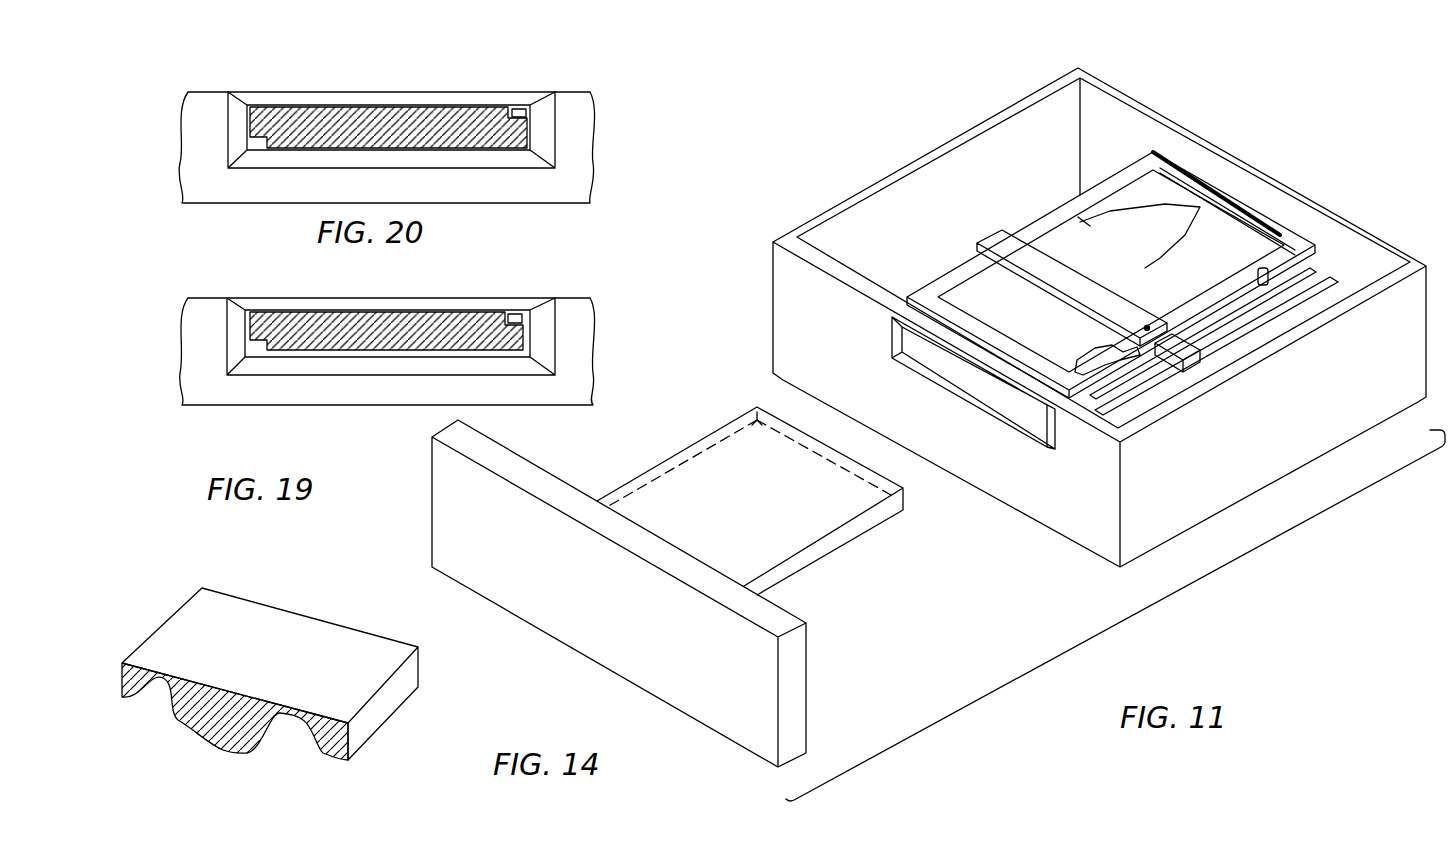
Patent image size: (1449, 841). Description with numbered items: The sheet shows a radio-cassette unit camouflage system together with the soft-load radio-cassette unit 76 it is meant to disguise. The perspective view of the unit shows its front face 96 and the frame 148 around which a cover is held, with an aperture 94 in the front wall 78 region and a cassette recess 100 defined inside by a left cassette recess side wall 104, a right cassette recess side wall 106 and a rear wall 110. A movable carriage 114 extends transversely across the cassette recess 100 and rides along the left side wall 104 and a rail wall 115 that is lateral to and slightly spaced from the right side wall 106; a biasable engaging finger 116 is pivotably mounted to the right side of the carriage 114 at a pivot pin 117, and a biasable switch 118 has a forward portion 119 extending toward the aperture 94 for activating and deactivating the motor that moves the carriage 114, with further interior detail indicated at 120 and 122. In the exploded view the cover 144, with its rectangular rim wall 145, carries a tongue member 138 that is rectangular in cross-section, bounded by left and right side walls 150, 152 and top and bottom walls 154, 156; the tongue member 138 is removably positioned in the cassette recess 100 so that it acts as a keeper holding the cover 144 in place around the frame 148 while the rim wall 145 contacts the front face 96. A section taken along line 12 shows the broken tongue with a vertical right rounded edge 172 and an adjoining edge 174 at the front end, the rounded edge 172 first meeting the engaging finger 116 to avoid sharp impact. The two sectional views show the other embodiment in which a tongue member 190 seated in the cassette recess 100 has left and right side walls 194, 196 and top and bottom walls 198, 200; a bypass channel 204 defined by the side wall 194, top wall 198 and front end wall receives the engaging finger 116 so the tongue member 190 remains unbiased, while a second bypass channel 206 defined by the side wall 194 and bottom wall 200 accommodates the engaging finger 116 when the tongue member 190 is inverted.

In FIG. 11, the soft-load radio-cassette unit 76 is at (799, 222).
In FIG. 11, the front wall 78 is at (955, 327).
In FIG. 11, the aperture 94 is at (933, 377).
In FIG. 20, the front face 96 is at (208, 112).
In FIG. 19, the front face 96 is at (207, 317).
In FIG. 11, the front face 96 is at (792, 303).
In FIG. 19, the cassette recess 100 is at (467, 312).
In FIG. 11, the left cassette recess side wall 104 is at (1040, 213).
In FIG. 20, the right cassette recess side wall 106 is at (528, 130).
In FIG. 11, the right cassette recess side wall 106 is at (1203, 323).
In FIG. 11, the rear wall 110 is at (1233, 193).
In FIG. 11, the movable carriage 114 is at (1072, 285).
In FIG. 11, the rail wall 115 is at (1217, 342).
In FIG. 20, the biasable engaging finger 116 is at (522, 107).
In FIG. 19, the biasable engaging finger 116 is at (527, 315).
In FIG. 11, the biasable engaging finger 116 is at (1092, 355).
In FIG. 11, the pivot pin 117 is at (1147, 330).
In FIG. 11, the biasable switch 118 is at (1260, 270).
In FIG. 11, the forward portion 119 is at (1253, 290).
In FIG. 11, the frame opening 120 is at (1152, 268).
In FIG. 11, the connector strip 122 is at (1250, 223).
In FIG. 14, the tongue member 138 is at (280, 635).
In FIG. 14, the cover 144 is at (597, 665).
In FIG. 14, the rim wall 145 is at (530, 473).
In FIG. 11, the frame 148 is at (787, 265).
In FIG. 14, the left side wall 150 is at (733, 418).
In FIG. 14, the right side wall 152 is at (835, 540).
In FIG. 14, the top wall 154 is at (675, 518).
In FIG. 14, the bottom wall 156 is at (839, 450).
In FIG. 14, the right rounded edge 172 is at (202, 588).
In FIG. 14, the side corner 174 is at (418, 650).
In FIG. 20, the tongue member 190 is at (348, 117).
In FIG. 19, the tongue member 190 is at (338, 325).
In FIG. 20, the left side wall 194 is at (528, 141).
In FIG. 19, the left side wall 194 is at (245, 327).
In FIG. 20, the right side wall 196 is at (250, 124).
In FIG. 19, the right side wall 196 is at (528, 338).
In FIG. 20, the top wall 198 is at (403, 148).
In FIG. 19, the top wall 198 is at (405, 312).
In FIG. 20, the bottom wall 200 is at (410, 108).
In FIG. 19, the bottom wall 200 is at (377, 353).
In FIG. 20, the bypass channel 204 is at (257, 143).
In FIG. 19, the bypass channel 204 is at (513, 318).
In FIG. 20, the bypass channel 206 is at (530, 118).
In FIG. 19, the bypass channel 206 is at (260, 343).
In FIG. 14, the section line 12- 12 is at (635, 402).